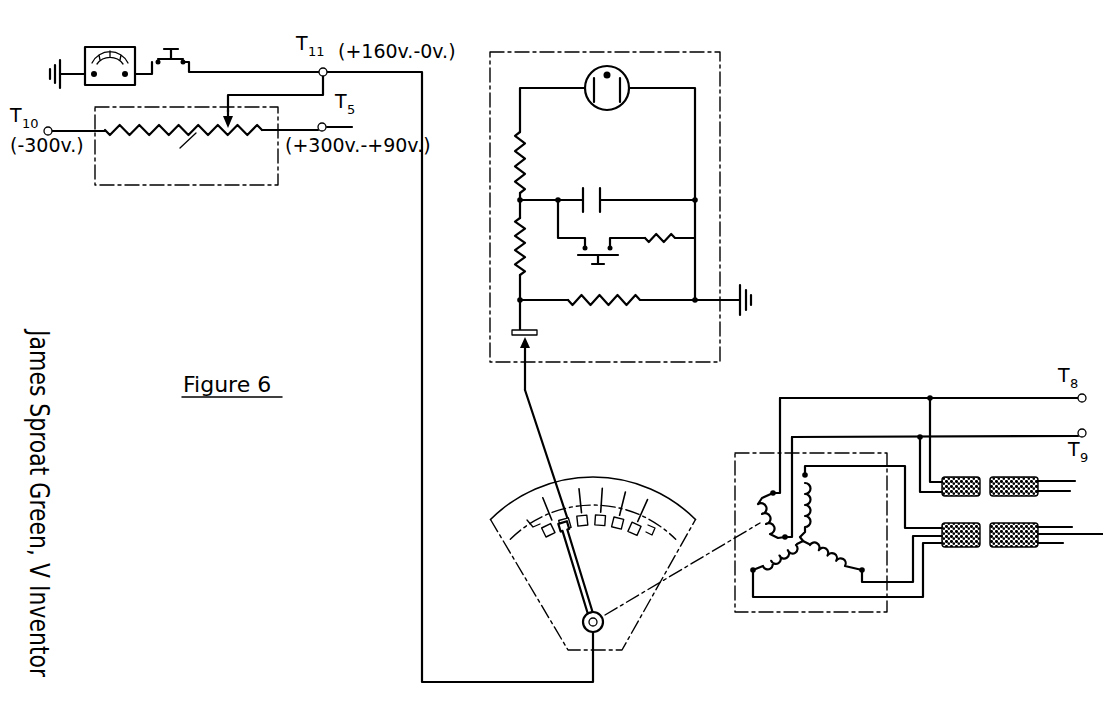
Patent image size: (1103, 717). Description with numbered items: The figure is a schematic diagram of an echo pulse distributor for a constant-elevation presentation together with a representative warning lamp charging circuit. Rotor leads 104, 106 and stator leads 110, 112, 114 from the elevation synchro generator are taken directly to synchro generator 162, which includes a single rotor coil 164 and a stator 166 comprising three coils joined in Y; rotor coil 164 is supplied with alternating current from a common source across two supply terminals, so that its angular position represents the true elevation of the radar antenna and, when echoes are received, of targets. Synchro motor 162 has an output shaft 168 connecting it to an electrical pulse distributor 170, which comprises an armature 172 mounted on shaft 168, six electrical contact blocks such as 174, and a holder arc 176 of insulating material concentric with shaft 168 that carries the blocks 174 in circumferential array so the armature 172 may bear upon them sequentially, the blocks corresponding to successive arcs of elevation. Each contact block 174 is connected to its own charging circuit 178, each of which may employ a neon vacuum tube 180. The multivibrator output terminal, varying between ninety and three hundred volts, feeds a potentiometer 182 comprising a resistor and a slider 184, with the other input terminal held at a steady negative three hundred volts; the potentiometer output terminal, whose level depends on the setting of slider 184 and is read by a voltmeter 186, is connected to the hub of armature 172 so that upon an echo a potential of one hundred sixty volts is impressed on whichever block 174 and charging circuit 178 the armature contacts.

The rotor lead 104 is at (1057, 479).
The rotor lead 106 is at (1069, 490).
The stator lead 110 is at (1063, 527).
The stator lead 112 is at (1080, 536).
The stator lead 114 is at (1055, 545).
The synchro generator 162 is at (822, 612).
The rotor coil 164 is at (757, 506).
The stator 166 is at (812, 503).
The output shaft 168 is at (688, 573).
The electrical pulse distributor 170 is at (546, 624).
The armature 172 is at (573, 573).
The contact block 174 is at (600, 528).
The holder arc 176 is at (527, 521).
The charging circuit 178 is at (722, 122).
The vacuum tube 180 is at (609, 101).
The potentiometer 182 is at (193, 186).
The slider 184 is at (225, 110).
The voltmeter 186 is at (90, 48).